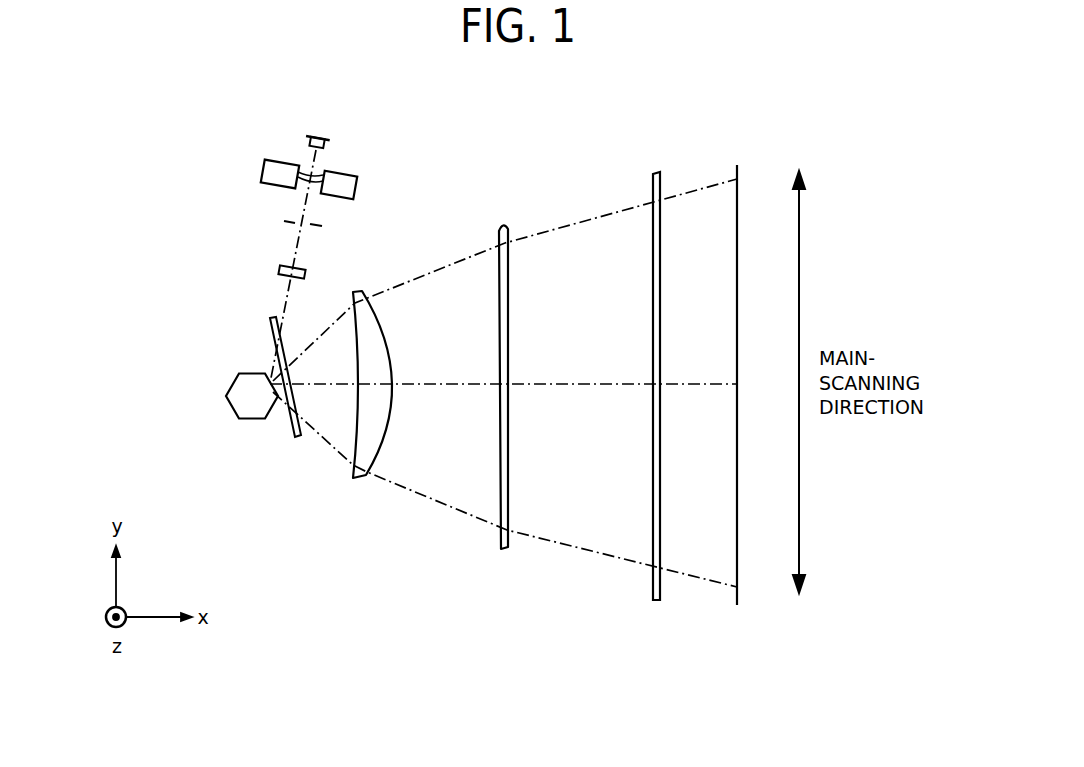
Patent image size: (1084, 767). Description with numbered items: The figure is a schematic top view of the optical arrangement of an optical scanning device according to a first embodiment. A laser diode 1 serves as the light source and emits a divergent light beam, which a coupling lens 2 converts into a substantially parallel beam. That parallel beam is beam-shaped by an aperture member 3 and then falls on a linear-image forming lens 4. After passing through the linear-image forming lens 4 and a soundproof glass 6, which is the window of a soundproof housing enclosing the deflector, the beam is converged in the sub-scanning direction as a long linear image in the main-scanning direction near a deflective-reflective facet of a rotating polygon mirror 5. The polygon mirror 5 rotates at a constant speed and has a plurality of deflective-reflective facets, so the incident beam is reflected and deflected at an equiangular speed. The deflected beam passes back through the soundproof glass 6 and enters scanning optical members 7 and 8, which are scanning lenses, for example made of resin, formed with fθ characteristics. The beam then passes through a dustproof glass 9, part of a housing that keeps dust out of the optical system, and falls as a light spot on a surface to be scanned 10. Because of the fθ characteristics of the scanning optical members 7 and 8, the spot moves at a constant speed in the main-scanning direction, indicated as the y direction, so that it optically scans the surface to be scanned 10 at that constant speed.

The laser diode 1 is at (306, 141).
The coupling lens 2 is at (262, 169).
The aperture member 3 is at (290, 223).
The linear-image forming lens 4 is at (281, 272).
The polygon mirror 5 is at (244, 420).
The soundproof glass 6 is at (297, 437).
The scanning optical member 7 is at (353, 479).
The scanning optical member 8 is at (505, 550).
The dustproof glass 9 is at (656, 602).
The surface to be scanned 10 is at (737, 605).